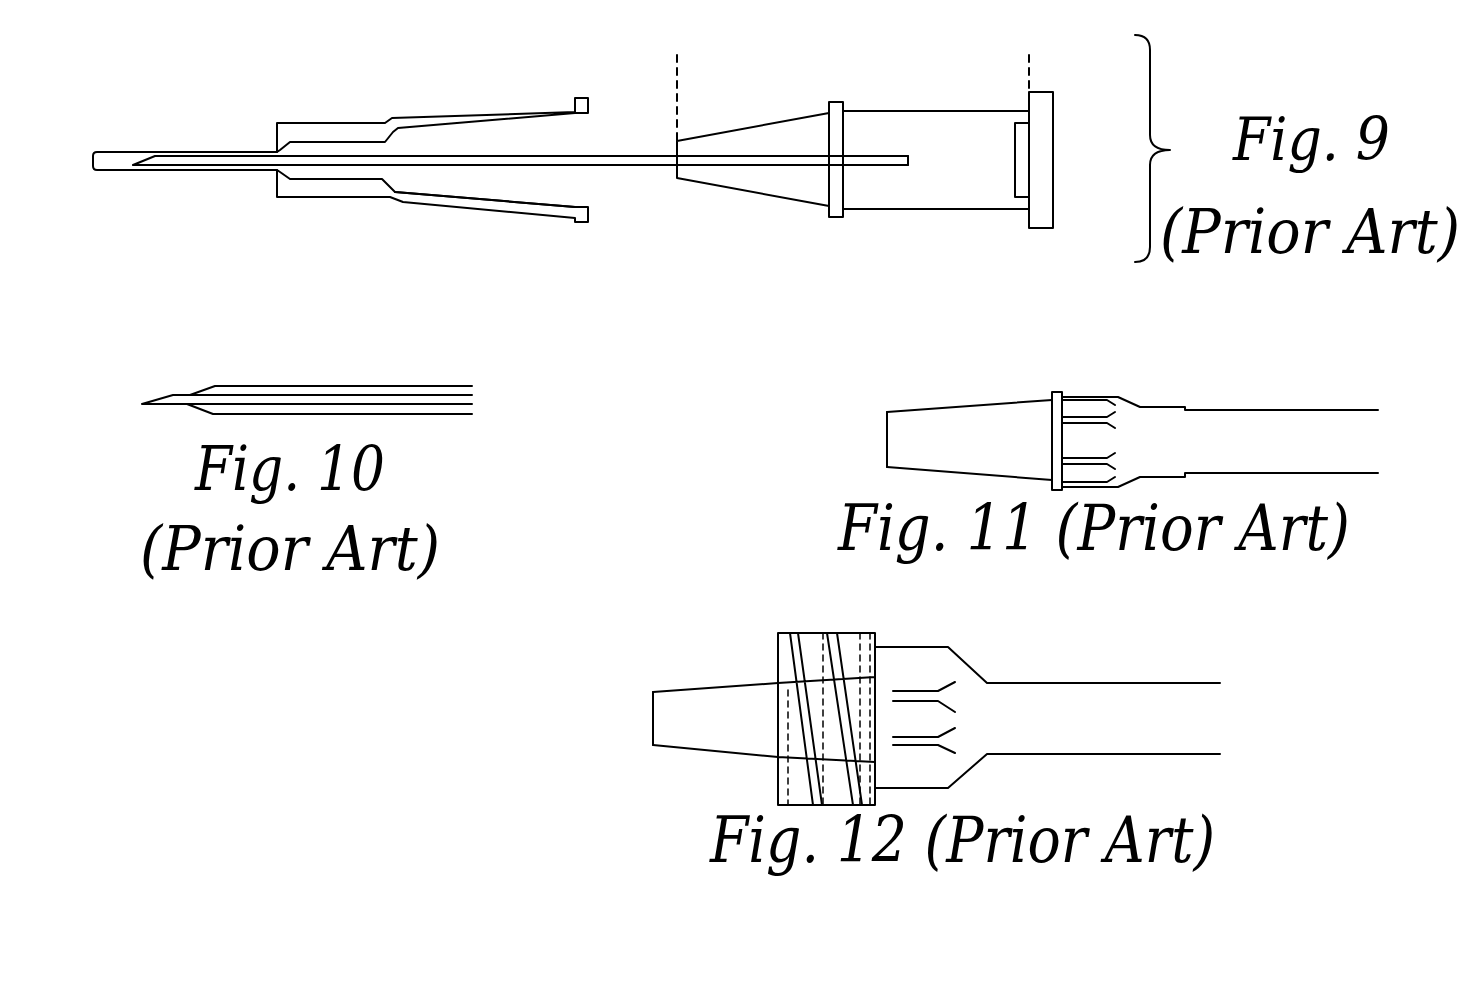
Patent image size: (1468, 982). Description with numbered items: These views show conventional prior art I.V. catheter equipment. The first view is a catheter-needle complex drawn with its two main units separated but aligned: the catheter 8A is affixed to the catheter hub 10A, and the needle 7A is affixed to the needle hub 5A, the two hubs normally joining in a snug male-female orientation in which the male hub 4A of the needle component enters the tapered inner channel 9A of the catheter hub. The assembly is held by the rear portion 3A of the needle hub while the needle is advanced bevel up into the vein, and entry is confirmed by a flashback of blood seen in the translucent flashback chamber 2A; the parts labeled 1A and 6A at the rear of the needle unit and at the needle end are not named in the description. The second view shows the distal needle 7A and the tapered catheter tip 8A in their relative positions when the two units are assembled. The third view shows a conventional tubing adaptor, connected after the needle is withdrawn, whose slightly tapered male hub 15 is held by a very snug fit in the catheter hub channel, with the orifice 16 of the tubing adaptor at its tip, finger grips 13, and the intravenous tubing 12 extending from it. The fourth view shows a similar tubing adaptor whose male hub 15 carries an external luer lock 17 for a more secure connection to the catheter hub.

In FIG. 9, the plunger 1A is at (1040, 175).
In FIG. 9, the flashback chamber 2A is at (968, 182).
In FIG. 9, the rear portion of needle hub 3A is at (840, 92).
In FIG. 9, the male hub of needle component 4A is at (677, 92).
In FIG. 9, the needle hub 5A is at (677, 55).
In FIG. 9, the needle proximal end 6A is at (912, 158).
In FIG. 9, the needle 7A is at (150, 172).
In FIG. 10, the needle 7A is at (146, 392).
In FIG. 9, the catheter 8A is at (121, 150).
In FIG. 10, the catheter 8A is at (221, 378).
In FIG. 9, the tapered inner channel of catheter hub 9A is at (455, 170).
In FIG. 9, the catheter hub 10A is at (342, 92).
In FIG. 11, the intravenous tubing 12 is at (1180, 408).
In FIG. 12, the intravenous tubing 12 is at (1005, 683).
In FIG. 11, the finger grips 13 is at (1095, 410).
In FIG. 12, the finger grips 13 is at (940, 692).
In FIG. 11, the male hub of tubing adaptor 15 is at (968, 405).
In FIG. 12, the male hub of tubing adaptor 15 is at (705, 686).
In FIG. 11, the orifice of tubing adaptor 16 is at (887, 434).
In FIG. 12, the orifice of tubing adaptor 16 is at (653, 708).
In FIG. 12, the external luer lock 17 is at (810, 766).